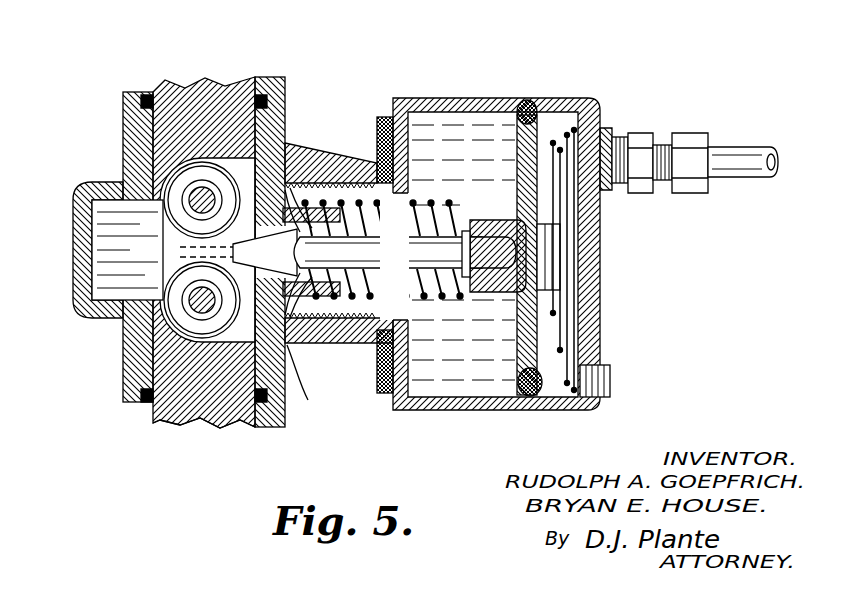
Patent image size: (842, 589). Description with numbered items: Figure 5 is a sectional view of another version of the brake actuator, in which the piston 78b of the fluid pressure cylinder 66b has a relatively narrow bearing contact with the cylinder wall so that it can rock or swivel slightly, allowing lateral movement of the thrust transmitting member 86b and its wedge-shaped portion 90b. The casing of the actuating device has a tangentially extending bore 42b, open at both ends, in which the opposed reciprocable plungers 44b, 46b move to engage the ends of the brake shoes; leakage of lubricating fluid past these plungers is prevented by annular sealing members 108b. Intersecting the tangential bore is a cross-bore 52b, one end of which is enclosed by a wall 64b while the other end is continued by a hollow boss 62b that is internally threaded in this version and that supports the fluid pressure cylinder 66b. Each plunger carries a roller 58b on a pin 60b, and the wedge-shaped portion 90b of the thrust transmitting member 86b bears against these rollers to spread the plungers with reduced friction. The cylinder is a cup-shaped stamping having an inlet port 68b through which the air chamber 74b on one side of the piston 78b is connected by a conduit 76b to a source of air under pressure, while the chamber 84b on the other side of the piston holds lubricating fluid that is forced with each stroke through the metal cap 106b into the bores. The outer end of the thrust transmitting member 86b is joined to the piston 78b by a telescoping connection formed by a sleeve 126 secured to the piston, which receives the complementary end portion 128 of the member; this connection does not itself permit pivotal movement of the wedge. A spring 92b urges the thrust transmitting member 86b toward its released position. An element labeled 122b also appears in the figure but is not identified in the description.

The tangentially extending bore 42b is at (168, 127).
The plunger 44b is at (150, 113).
The plunger 46b is at (160, 373).
The cross-bore 52b is at (130, 280).
The roller 58b is at (167, 127).
The pin 60b is at (197, 185).
The wall 64b is at (78, 262).
The wedge-shaped portion 90b is at (262, 150).
The annular sealing member 108b is at (145, 98).
The hollow boss 62b is at (345, 163).
The spring 92b is at (420, 230).
The metal cap 106b is at (303, 355).
The seal ring 122b is at (443, 100).
The sleeve 126 is at (493, 247).
The complementary end portion 128 is at (478, 222).
The chamber 84b is at (482, 385).
The thrust transmitting member 86b is at (437, 378).
The piston 78b is at (490, 385).
The fluid pressure cylinder 66b is at (588, 272).
The inlet port 68b is at (610, 143).
The air chamber 74b is at (560, 365).
The conduit 76b is at (728, 158).